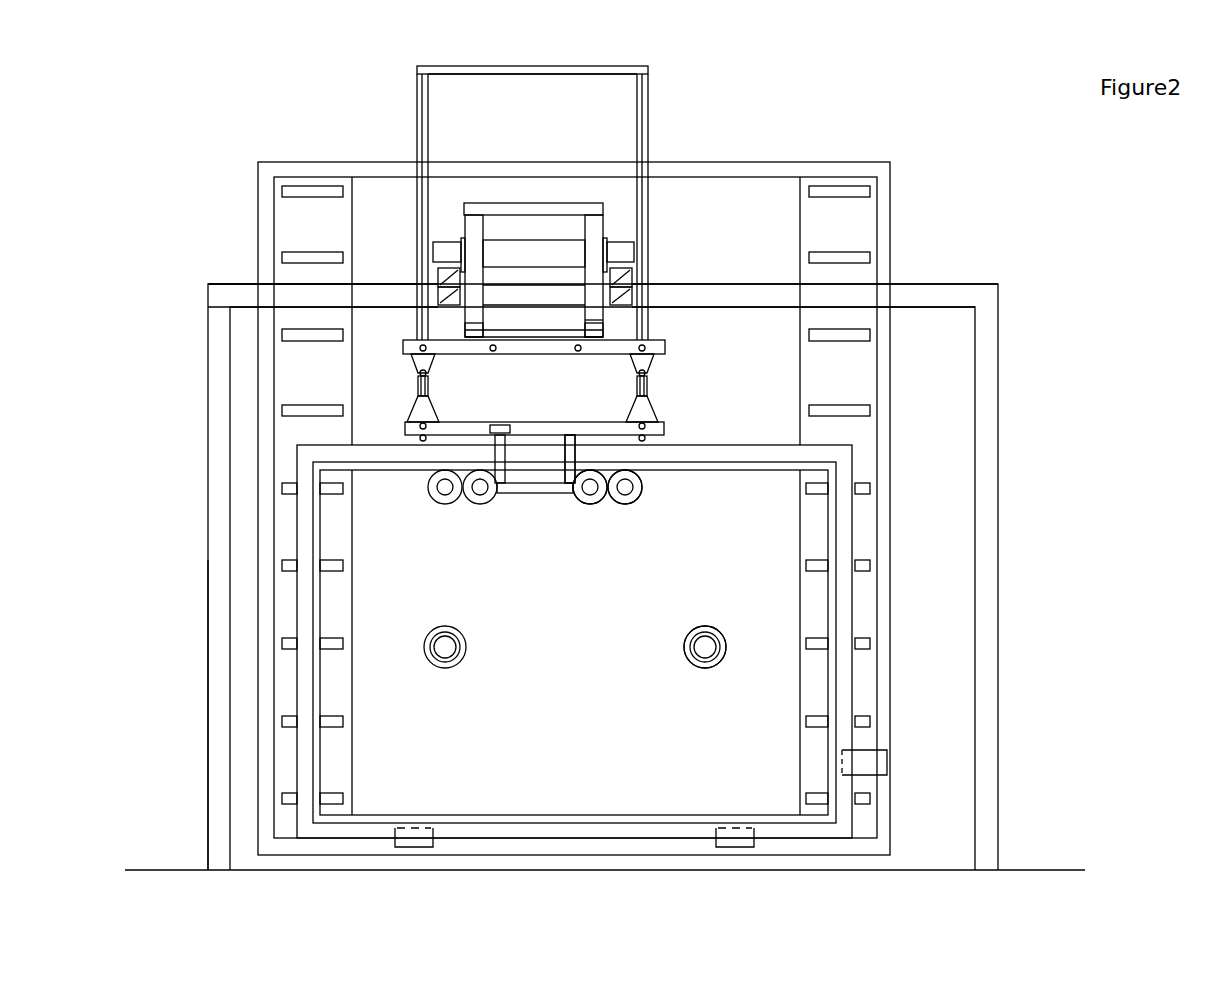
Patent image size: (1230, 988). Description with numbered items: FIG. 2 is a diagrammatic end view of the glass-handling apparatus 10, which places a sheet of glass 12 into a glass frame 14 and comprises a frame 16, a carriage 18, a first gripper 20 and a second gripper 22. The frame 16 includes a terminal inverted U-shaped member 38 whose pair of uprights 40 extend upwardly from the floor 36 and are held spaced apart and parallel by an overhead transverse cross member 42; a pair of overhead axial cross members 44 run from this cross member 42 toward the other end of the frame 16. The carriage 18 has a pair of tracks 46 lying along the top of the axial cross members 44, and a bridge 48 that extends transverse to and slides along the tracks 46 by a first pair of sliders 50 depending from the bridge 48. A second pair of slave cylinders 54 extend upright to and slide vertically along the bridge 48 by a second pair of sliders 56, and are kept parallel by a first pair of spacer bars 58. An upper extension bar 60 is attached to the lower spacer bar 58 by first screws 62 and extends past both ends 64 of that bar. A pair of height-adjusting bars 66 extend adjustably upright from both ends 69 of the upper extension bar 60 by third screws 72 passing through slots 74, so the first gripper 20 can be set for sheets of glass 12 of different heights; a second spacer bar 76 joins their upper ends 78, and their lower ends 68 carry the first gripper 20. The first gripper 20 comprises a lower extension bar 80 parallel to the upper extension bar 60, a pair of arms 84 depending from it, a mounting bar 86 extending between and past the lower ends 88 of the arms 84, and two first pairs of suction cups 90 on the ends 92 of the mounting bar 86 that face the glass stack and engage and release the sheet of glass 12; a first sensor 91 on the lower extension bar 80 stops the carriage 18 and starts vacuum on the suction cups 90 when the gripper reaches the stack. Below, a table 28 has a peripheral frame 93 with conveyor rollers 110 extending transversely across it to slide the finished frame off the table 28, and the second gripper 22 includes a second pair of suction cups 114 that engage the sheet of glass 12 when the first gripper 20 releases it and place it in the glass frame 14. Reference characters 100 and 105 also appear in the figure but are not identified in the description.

The apparatus 10 is at (238, 110).
The sheet of glass 12 is at (500, 737).
The glass frame 14 is at (830, 610).
The frame 16 is at (208, 312).
The carriage 18 is at (650, 100).
The first gripper 20 is at (520, 500).
The second gripper 22 is at (700, 627).
The table 28 is at (318, 160).
The floor 36 is at (520, 913).
The terminal inverted U-shaped member 38 is at (208, 565).
The uprights 40 is at (213, 418).
The overhead transverse cross member 42 is at (237, 297).
The overhead axial cross members 44 is at (440, 310).
The tracks 46 is at (445, 293).
The bridge 48 is at (500, 250).
The first pair of sliders 50 is at (445, 275).
The second pair of slave cylinders 54 is at (450, 225).
The second pair of sliders 56 is at (445, 250).
The first pair of spacer bars 58 is at (508, 212).
The upper extension bar 60 is at (532, 348).
The first screws 62 is at (492, 358).
The ends 64 is at (533, 327).
The height-adjusting bars 66 is at (420, 125).
The lower ends 68 is at (410, 440).
The ends 69 is at (418, 348).
The third screws 72 is at (418, 380).
The slots 74 is at (648, 330).
The second spacer bar 76 is at (535, 70).
The upper ends 78 is at (640, 85).
The lower extension bar 80 is at (668, 430).
The arms 84 is at (525, 490).
The mounting bar 86 is at (570, 485).
The lower ends 88 is at (500, 483).
The first pair of suction cups 90 is at (628, 505).
The first sensor 91 is at (490, 433).
The ends 92 is at (592, 478).
The peripheral frame 93 is at (890, 172).
The system 100 is at (828, 117).
The drain 105 is at (873, 765).
The conveyor rollers 110 is at (865, 335).
The second pair of suction cups 114 is at (692, 650).